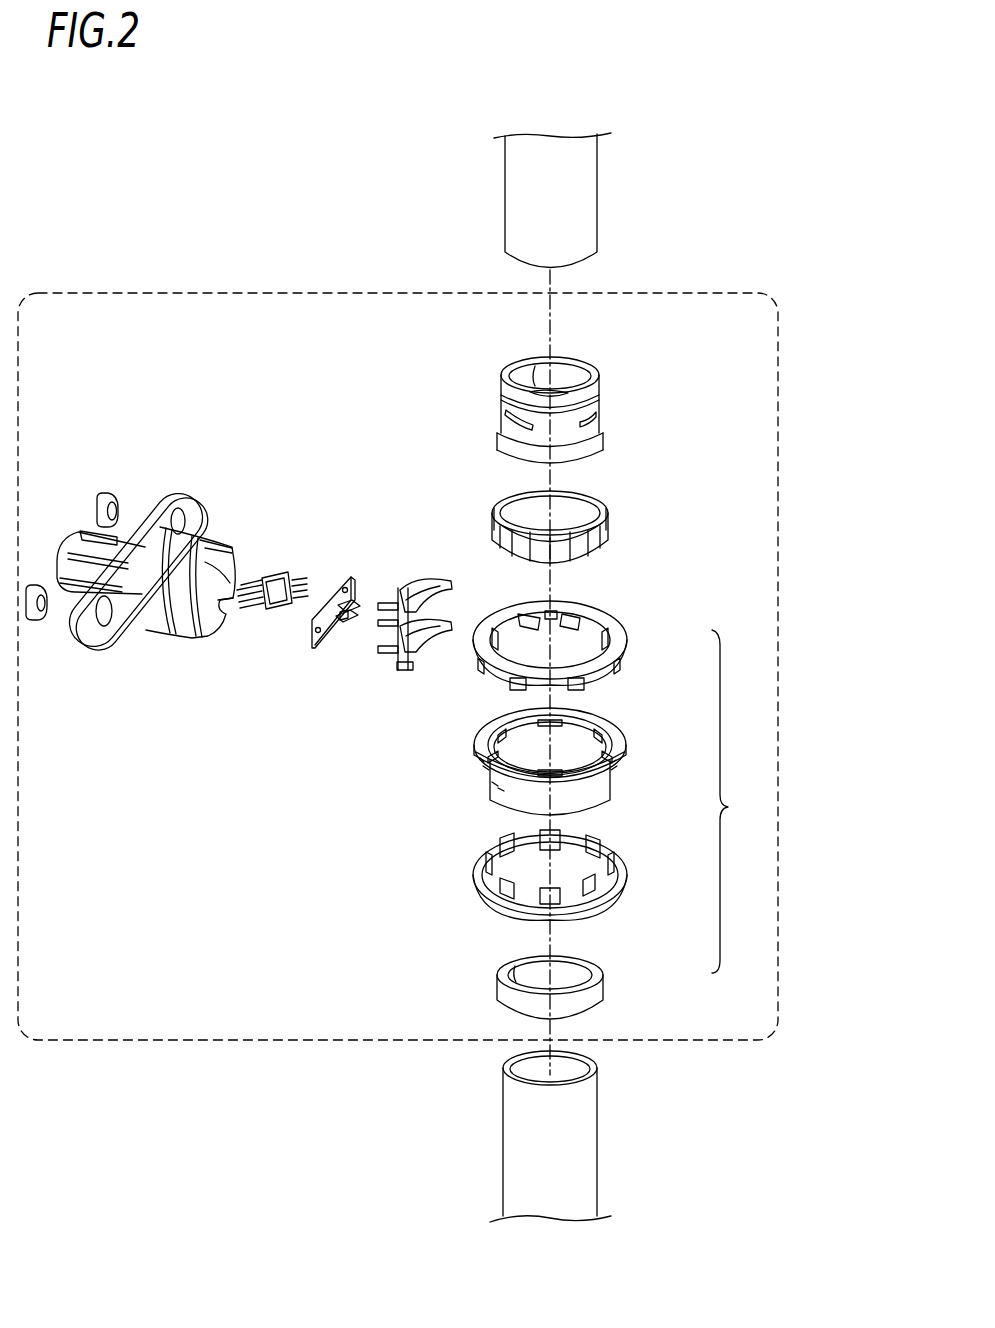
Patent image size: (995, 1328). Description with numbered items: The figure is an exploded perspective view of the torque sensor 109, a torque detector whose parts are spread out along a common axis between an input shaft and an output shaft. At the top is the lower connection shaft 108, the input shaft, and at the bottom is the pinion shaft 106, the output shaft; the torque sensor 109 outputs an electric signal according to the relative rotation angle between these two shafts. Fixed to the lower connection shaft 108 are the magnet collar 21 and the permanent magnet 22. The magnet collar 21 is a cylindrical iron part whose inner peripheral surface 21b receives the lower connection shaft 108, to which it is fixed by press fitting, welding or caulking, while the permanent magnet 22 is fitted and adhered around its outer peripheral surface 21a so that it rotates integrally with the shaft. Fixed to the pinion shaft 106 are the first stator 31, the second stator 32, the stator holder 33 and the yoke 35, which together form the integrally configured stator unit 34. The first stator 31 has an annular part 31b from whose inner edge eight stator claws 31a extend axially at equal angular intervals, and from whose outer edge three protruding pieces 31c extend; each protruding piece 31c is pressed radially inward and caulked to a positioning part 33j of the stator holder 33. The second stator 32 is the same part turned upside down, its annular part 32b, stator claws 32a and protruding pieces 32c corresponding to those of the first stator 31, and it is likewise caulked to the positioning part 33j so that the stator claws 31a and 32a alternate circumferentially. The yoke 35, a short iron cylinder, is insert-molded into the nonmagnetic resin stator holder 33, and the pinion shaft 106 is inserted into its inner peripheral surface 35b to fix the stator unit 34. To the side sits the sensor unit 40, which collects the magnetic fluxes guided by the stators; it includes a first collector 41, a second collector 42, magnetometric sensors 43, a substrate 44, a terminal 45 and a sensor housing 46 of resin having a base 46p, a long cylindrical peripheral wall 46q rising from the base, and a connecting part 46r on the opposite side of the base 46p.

The pinion shaft 106 is at (597, 1140).
The lower connection shaft 108 is at (597, 192).
The torque sensor 109 is at (338, 293).
The magnet collar 21 is at (553, 395).
The outer peripheral surface 21a is at (508, 433).
The inner peripheral surface 21b is at (527, 361).
The permanent magnet 22 is at (608, 527).
The first stator 31 is at (573, 642).
The stator claws 31a is at (574, 618).
The annular part 31b is at (618, 628).
The protruding pieces 31c is at (478, 668).
The stator holder 33 is at (555, 771).
The positioning part 33j is at (478, 768).
The stator unit 34 is at (736, 801).
The second stator 32 is at (563, 891).
The stator claws 32a is at (598, 886).
The annular part 32b is at (580, 903).
The protruding pieces 32c is at (500, 902).
The yoke 35 is at (556, 982).
The inner peripheral surface 35b is at (510, 968).
The sensor unit 40 is at (285, 505).
The first collector 41 is at (410, 585).
The second collector 42 is at (405, 674).
The magnetometric sensors 43 is at (348, 630).
The substrate 44 is at (312, 642).
The terminal 45 is at (262, 610).
The sensor housing 46 is at (134, 594).
The base 46p is at (168, 497).
The peripheral wall 46q is at (200, 530).
The connecting part 46r is at (85, 540).